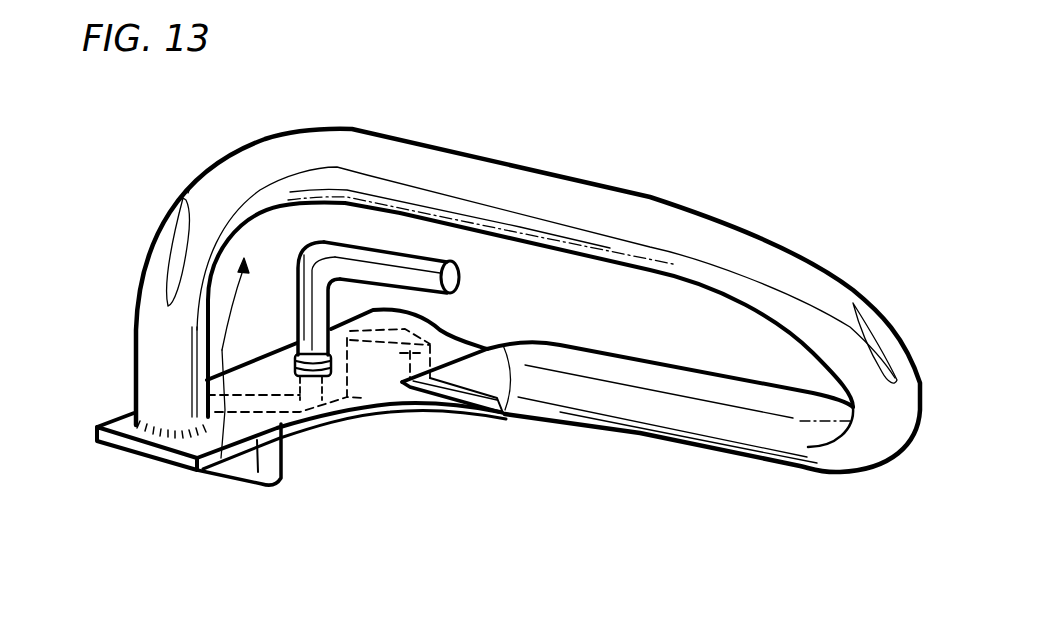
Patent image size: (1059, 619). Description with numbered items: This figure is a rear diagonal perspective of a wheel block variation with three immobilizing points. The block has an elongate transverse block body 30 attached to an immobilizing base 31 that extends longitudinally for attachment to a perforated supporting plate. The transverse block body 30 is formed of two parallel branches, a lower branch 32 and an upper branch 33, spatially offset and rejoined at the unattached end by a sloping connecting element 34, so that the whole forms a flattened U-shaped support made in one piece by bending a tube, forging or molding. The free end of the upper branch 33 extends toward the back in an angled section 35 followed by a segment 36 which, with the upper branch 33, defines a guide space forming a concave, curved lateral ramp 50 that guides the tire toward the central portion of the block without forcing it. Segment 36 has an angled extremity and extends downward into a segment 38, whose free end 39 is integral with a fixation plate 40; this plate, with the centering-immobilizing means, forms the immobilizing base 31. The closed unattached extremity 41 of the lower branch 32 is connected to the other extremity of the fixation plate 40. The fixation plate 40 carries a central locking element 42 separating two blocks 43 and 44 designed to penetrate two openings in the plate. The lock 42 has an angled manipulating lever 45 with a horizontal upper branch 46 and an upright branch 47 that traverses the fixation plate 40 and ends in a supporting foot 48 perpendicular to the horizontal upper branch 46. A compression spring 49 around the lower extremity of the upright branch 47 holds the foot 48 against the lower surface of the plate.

The transverse block body 30 is at (239, 122).
The immobilizing base 31 is at (378, 450).
The lower branch 32 is at (653, 403).
The upper branch 33 is at (537, 187).
The sloping connecting element 34 is at (833, 300).
The angled section 35 is at (350, 150).
The segment 36 is at (263, 157).
The segment 38 is at (147, 338).
The free end 39 is at (160, 410).
The fixation plate 40 is at (261, 367).
The unattached extremity 41 is at (473, 390).
The central locking element 42 is at (388, 235).
The block 43 is at (272, 485).
The block 44 is at (408, 381).
The angled manipulating lever 45 is at (300, 260).
The horizontal upper branch 46 is at (413, 260).
The upright branch 47 is at (303, 290).
The supporting foot 48 is at (335, 443).
The compression spring 49 is at (313, 360).
The lateral ramp 50 is at (221, 458).